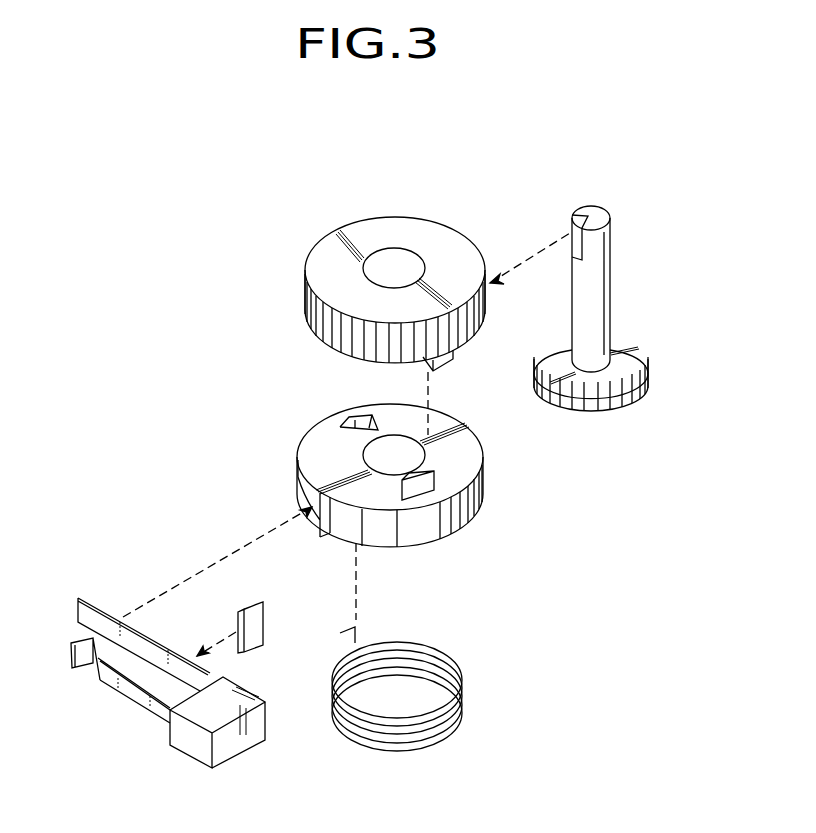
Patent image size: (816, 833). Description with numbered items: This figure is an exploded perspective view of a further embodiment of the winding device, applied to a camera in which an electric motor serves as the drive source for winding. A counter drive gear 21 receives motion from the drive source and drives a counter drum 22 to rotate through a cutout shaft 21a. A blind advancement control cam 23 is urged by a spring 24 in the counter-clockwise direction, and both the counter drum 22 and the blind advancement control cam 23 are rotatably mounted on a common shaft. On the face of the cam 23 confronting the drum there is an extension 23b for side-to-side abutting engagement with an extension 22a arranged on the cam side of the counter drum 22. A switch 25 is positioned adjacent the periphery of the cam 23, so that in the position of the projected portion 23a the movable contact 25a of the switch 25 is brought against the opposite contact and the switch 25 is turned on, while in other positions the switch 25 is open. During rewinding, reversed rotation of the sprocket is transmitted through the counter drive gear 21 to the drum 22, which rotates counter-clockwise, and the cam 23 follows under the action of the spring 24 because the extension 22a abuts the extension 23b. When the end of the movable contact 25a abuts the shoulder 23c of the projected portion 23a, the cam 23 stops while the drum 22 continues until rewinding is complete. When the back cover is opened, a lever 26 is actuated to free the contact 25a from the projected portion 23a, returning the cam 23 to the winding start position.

The counter drive gear 21 is at (638, 350).
The cutout shaft 21a is at (598, 292).
The counter drum 22 is at (447, 233).
The extension 22a is at (449, 363).
The blind advancement control cam 23 is at (470, 512).
The projected portion 23a is at (298, 485).
The extension 23b is at (420, 496).
The shoulder 23c is at (331, 536).
The spring 24 is at (438, 732).
The switch 25 is at (168, 677).
The movable contact 25a is at (80, 598).
The lever 26 is at (260, 630).